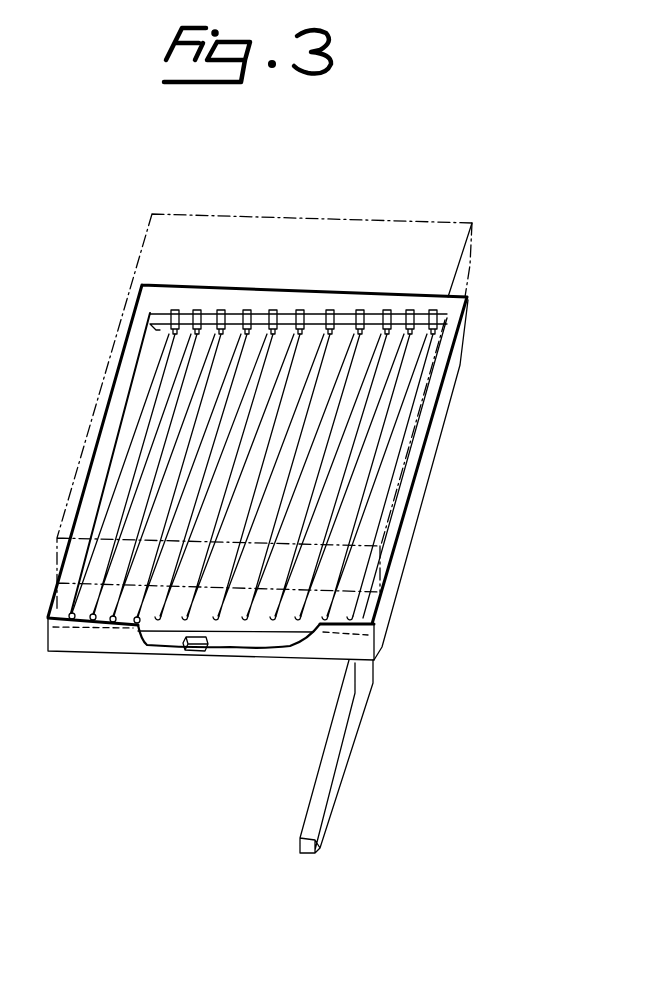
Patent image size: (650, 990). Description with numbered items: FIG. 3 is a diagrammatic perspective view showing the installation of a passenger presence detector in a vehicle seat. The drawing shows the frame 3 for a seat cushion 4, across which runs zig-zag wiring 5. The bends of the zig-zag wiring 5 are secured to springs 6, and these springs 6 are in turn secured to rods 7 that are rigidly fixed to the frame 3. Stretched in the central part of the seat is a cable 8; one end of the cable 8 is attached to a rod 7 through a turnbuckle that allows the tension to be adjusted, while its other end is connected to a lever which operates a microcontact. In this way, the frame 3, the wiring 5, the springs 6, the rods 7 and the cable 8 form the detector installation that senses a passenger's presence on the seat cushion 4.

The frame 3 is at (382, 550).
The seat cushion 4 is at (78, 465).
The zig-zag wiring 5 is at (148, 393).
The springs 6 is at (309, 326).
The rods 7 is at (346, 326).
The cable 8 is at (252, 442).